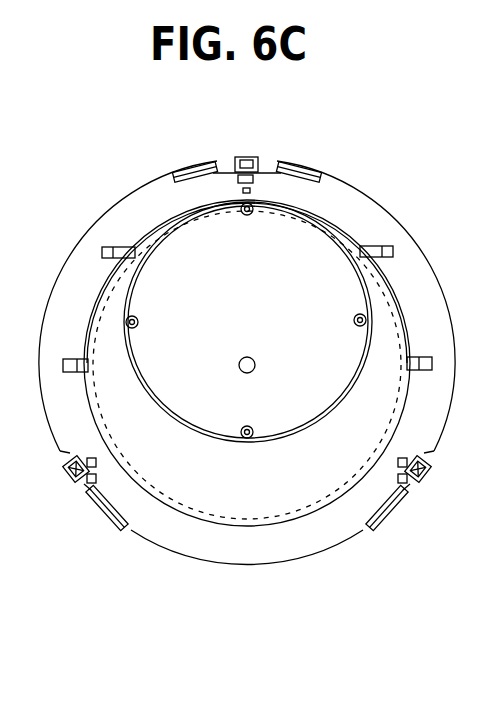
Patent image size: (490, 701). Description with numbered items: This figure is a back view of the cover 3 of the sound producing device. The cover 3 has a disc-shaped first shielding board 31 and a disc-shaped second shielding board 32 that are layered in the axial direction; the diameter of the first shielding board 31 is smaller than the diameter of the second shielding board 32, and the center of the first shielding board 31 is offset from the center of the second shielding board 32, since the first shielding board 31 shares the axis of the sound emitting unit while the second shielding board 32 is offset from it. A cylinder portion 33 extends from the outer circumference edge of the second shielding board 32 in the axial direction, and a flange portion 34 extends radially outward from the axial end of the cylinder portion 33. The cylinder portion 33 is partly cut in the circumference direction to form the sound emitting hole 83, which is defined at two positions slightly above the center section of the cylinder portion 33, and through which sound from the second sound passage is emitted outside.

The cover 3 is at (157, 170).
The first shielding board 31 is at (300, 262).
The second shielding board 32 is at (280, 487).
The cylinder portion 33 is at (291, 207).
The flange portion 34 is at (249, 565).
The sound emitting hole 83 is at (393, 292).